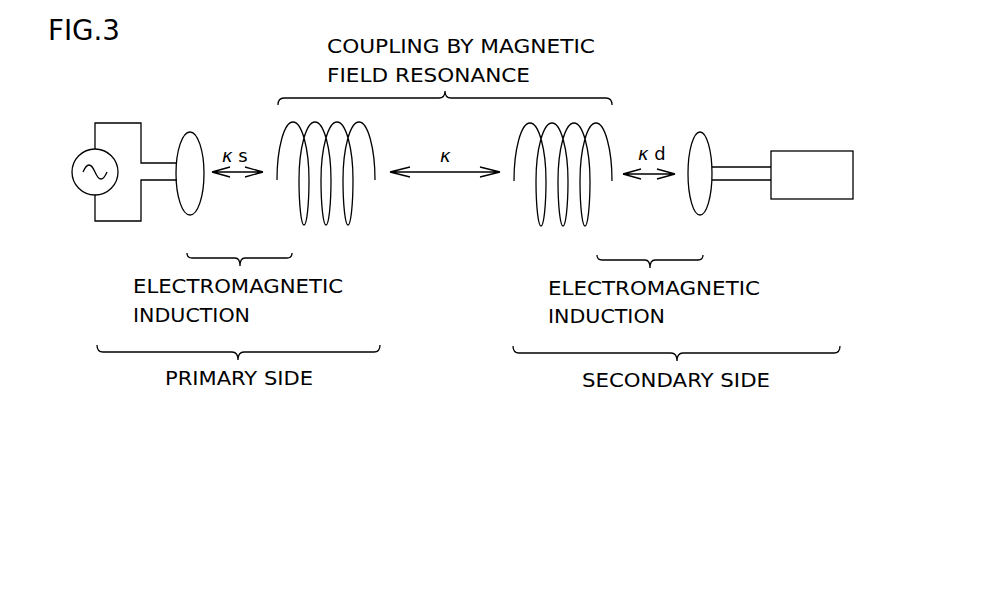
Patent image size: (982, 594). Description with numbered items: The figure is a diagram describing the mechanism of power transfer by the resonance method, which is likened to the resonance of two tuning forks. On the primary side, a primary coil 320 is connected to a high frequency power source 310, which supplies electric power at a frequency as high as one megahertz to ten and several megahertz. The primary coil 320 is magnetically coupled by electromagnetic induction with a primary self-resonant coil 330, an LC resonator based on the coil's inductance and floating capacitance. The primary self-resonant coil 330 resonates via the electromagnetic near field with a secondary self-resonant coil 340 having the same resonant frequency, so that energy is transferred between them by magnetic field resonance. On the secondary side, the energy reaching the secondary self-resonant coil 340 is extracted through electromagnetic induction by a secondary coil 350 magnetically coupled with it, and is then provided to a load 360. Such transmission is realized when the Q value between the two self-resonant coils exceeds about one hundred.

The high frequency power source 310 is at (80, 155).
The primary coil 320 is at (191, 131).
The primary self-resonant coil 330 is at (325, 226).
The secondary self-resonant coil 340 is at (562, 228).
The secondary coil 350 is at (700, 131).
The load 360 is at (813, 150).